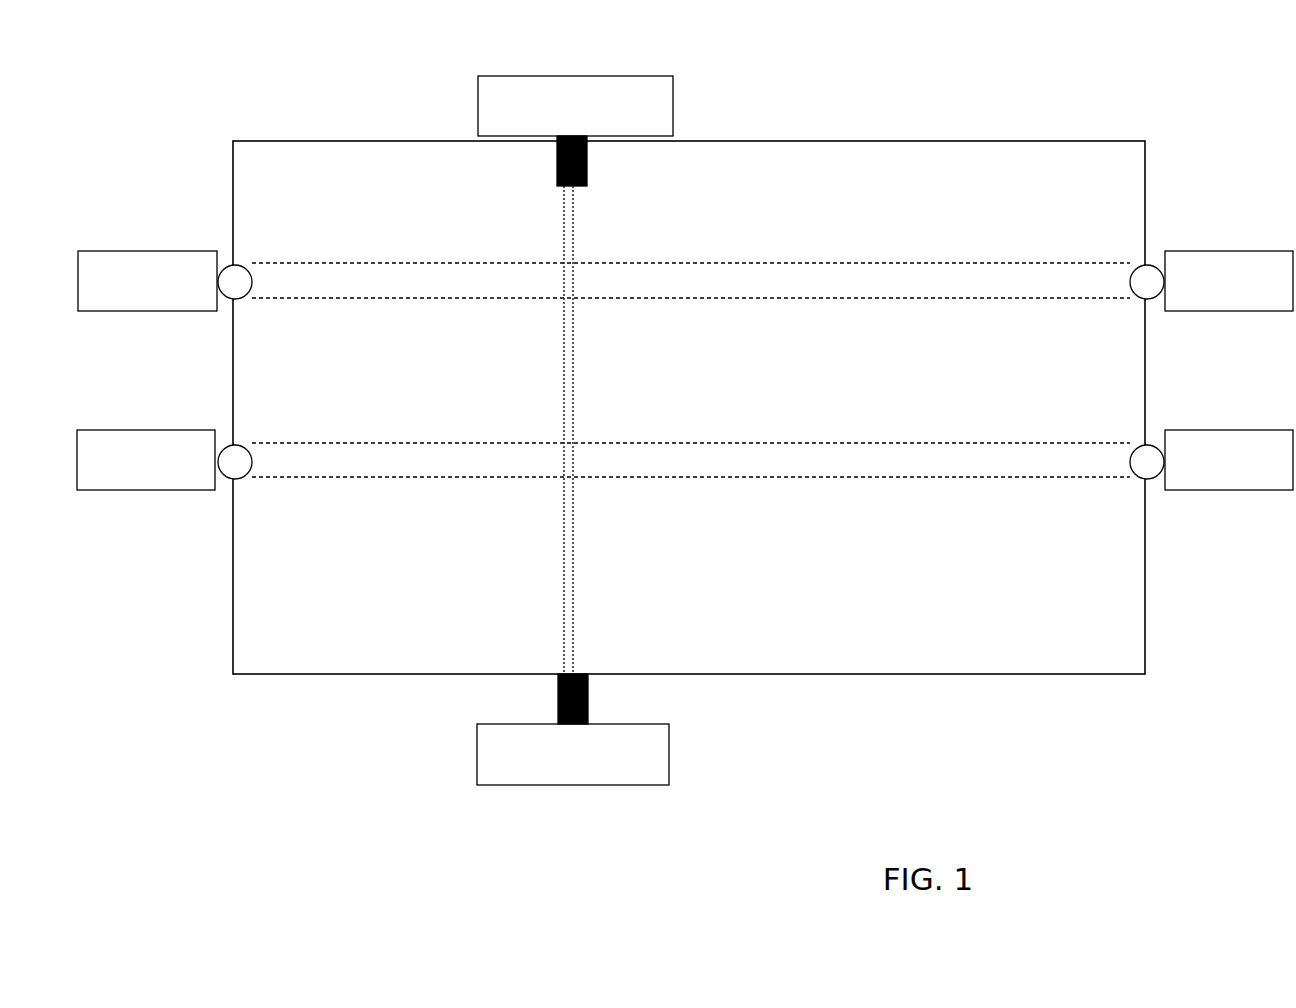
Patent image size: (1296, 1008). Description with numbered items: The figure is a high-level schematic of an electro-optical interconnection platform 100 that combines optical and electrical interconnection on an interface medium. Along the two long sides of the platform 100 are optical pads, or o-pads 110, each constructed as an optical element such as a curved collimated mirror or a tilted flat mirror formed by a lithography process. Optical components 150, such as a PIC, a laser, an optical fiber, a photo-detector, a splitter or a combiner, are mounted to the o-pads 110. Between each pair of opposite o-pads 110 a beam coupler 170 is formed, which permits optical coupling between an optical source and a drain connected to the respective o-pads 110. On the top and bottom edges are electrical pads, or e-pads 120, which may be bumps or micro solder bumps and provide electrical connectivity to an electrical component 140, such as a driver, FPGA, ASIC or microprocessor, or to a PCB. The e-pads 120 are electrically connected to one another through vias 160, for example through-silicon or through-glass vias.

The electro-optical interconnection platform 100 is at (1078, 142).
The optical pad (o-pad) 110 is at (228, 293).
The electrical pad (e-pad) 120 is at (602, 167).
The electrical component 140 is at (575, 430).
The optical component 150 is at (685, 370).
The via 160 is at (567, 332).
The beam coupler 170 is at (895, 298).